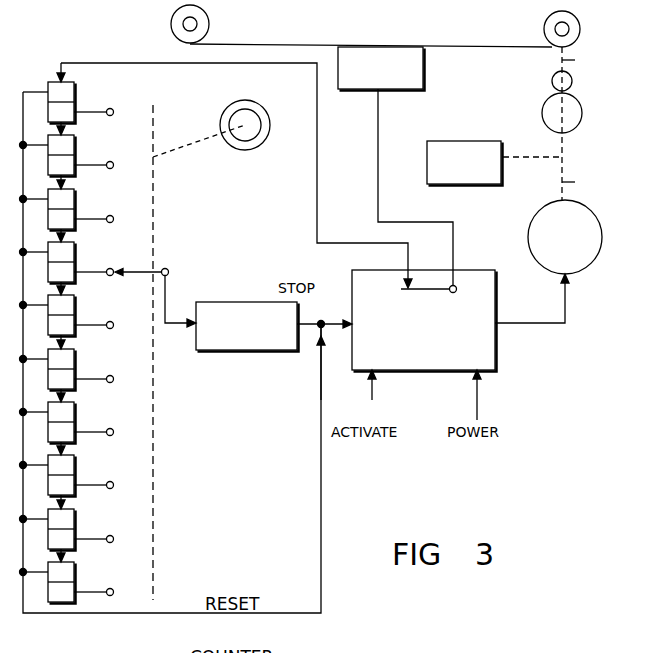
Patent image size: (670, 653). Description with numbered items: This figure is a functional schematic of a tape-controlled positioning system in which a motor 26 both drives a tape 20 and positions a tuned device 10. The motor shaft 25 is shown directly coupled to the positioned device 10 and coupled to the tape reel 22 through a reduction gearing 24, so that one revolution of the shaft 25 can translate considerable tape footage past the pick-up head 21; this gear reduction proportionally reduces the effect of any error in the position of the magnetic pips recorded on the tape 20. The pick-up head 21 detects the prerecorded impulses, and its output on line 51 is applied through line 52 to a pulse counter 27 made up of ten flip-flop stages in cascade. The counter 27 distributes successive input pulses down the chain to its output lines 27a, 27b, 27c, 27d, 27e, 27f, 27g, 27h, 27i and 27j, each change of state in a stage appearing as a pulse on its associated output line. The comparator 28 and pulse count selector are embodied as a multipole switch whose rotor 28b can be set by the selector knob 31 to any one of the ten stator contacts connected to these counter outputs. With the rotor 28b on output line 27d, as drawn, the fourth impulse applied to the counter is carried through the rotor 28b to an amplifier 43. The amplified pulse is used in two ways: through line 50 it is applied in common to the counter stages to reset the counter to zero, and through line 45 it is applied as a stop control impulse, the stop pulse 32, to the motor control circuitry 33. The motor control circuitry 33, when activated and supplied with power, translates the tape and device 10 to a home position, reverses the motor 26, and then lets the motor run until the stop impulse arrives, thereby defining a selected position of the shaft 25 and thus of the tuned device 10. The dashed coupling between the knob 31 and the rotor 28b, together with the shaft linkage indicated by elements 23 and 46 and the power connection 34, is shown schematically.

The tuned device 10 is at (478, 141).
The tape 20 is at (472, 45).
The pick-up head 21 is at (413, 92).
The tape reel 22 is at (580, 30).
The capstan shaft 23 is at (583, 61).
The reduction gearing 24 is at (553, 92).
The motor shaft 25 is at (573, 123).
The motor 26 is at (533, 218).
The pulse counter 27 is at (72, 46).
The counter output line 27a is at (96, 113).
The counter output line 27b is at (96, 166).
The counter output line 27c is at (96, 220).
The counter output line 27d is at (96, 273).
The counter output line 27e is at (93, 322).
The counter output line 27f is at (96, 380).
The counter output line 27g is at (96, 433).
The counter output line 27h is at (96, 486).
The counter output line 27i is at (96, 540).
The counter output line 27j is at (100, 594).
The comparator 28 is at (73, 583).
The switch rotor 28b is at (122, 284).
The selector knob 31 is at (260, 133).
The stop pulse 32 is at (311, 328).
The motor control circuitry 33 is at (411, 371).
The power line 34 is at (480, 397).
The amplifier 43 is at (216, 351).
The stop control line 45 is at (325, 338).
The selector connection 46 is at (167, 295).
The reset line 50 is at (321, 478).
The transducer head line 51 is at (378, 124).
The counter input line 52 is at (317, 219).